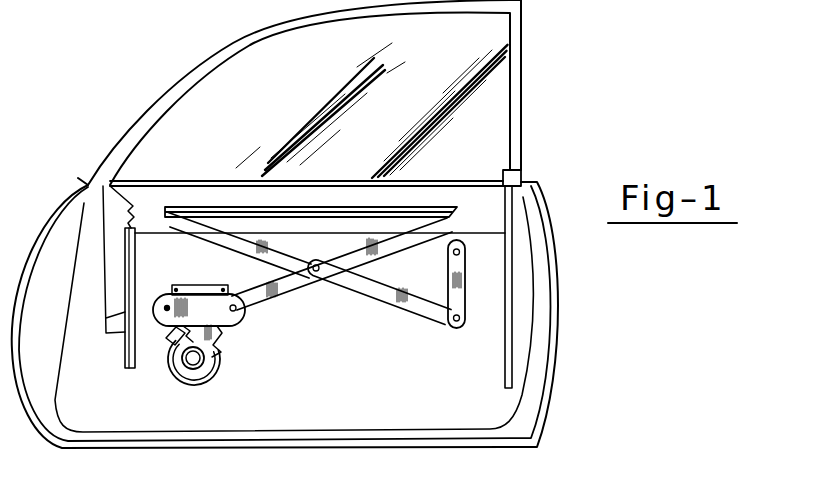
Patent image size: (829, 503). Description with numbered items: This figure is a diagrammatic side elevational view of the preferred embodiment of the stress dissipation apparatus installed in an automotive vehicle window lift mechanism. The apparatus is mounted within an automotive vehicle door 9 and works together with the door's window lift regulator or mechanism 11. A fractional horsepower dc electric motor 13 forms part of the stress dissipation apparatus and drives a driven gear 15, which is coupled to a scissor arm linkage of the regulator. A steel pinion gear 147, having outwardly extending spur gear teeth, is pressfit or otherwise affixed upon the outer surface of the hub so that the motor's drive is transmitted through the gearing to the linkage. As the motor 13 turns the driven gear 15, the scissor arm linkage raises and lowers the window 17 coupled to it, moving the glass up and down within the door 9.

The automotive vehicle door 9 is at (460, 393).
The window lift regulator 11 is at (378, 295).
The fractional horsepower dc electric motor 13 is at (172, 343).
The pinion gear 147 is at (195, 343).
The driven gear 15 is at (207, 366).
The window 17 is at (306, 91).